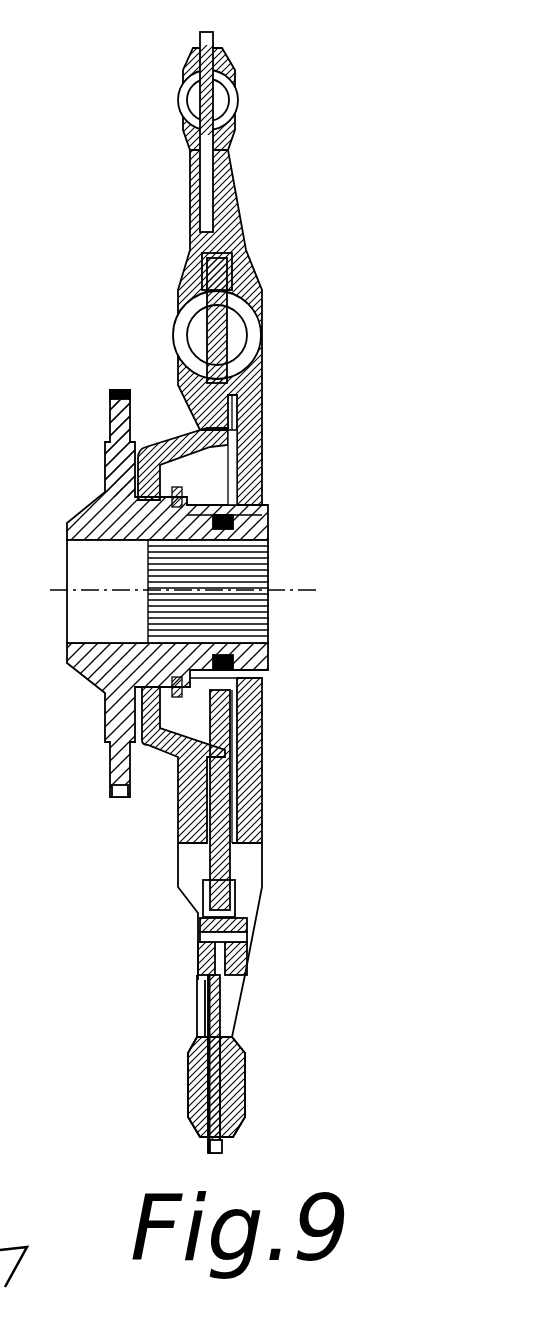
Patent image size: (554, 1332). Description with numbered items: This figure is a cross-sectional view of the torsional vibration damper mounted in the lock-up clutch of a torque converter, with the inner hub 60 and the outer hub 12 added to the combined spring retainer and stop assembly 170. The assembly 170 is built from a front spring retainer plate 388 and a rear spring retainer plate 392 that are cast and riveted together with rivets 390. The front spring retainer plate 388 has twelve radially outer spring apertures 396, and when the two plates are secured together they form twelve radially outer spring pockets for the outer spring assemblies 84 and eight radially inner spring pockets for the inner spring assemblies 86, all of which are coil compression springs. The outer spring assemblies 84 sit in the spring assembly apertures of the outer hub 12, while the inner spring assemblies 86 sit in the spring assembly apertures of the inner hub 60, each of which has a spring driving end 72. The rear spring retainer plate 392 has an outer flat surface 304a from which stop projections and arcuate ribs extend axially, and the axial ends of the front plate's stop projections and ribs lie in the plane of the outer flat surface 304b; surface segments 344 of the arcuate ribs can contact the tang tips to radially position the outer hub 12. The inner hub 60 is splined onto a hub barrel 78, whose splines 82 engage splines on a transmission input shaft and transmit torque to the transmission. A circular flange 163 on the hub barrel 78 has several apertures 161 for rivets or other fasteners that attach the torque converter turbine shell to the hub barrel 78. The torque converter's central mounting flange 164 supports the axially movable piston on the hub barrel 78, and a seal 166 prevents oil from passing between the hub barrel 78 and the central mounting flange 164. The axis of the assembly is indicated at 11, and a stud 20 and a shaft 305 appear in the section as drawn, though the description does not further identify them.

The hub assembly axis 11 is at (300, 588).
The outer hub 12 is at (207, 30).
The bearing 20 is at (207, 108).
The inner hub 60 is at (163, 433).
The spring driving end 72 is at (222, 335).
The hub barrel 78 is at (270, 662).
The splines 82 is at (260, 610).
The outer spring assembly 84 is at (237, 105).
The inner spring assembly 86 is at (173, 313).
The aperture 161 is at (110, 400).
The circular flange 163 is at (115, 453).
The central mounting flange 164 is at (230, 495).
The seal 166 is at (267, 524).
The combined spring retainer and stop assembly 170 is at (171, 827).
The outer flat surface 304a is at (210, 1083).
The outer flat surface 304b is at (225, 1105).
The shaft 305 is at (235, 895).
The surface segment 344 is at (210, 230).
The front spring retainer plate 388 is at (237, 1065).
The rivet 390 is at (245, 942).
The rear spring retainer plate 392 is at (190, 1060).
The radially outer spring aperture 396 is at (246, 85).